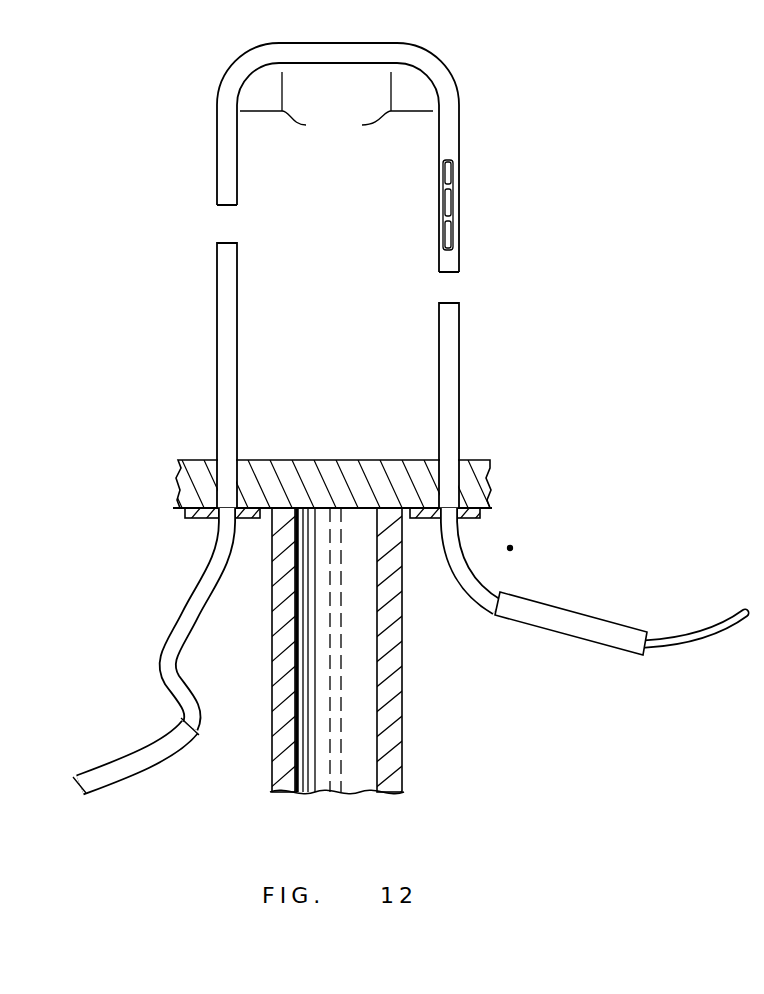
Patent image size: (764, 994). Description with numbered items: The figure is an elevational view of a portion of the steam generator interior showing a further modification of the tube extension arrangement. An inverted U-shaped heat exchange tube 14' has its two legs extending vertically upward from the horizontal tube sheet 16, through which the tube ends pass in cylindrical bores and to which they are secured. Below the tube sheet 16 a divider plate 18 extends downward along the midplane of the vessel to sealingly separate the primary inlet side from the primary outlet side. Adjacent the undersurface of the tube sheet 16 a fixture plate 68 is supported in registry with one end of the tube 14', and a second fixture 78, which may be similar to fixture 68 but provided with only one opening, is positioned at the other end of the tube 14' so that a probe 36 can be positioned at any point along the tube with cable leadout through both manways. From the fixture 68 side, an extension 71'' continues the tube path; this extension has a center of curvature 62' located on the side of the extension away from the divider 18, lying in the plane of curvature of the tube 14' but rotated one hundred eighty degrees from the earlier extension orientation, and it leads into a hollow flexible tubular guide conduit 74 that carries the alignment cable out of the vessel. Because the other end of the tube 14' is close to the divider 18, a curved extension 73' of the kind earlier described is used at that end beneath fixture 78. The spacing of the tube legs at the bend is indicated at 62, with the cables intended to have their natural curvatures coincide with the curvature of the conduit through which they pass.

The tube 14' is at (373, 275).
The handle width 62 is at (336, 106).
The center of curvature 62' is at (554, 548).
The probe 36 is at (453, 200).
The tube sheet 16 is at (200, 462).
The fixture 78 is at (190, 519).
The fixture plate 68 is at (475, 520).
The extension 73' is at (150, 650).
The extension 71'' is at (497, 557).
The flexible tubular guide conduit 74 is at (600, 622).
The divider plate 18 is at (341, 675).